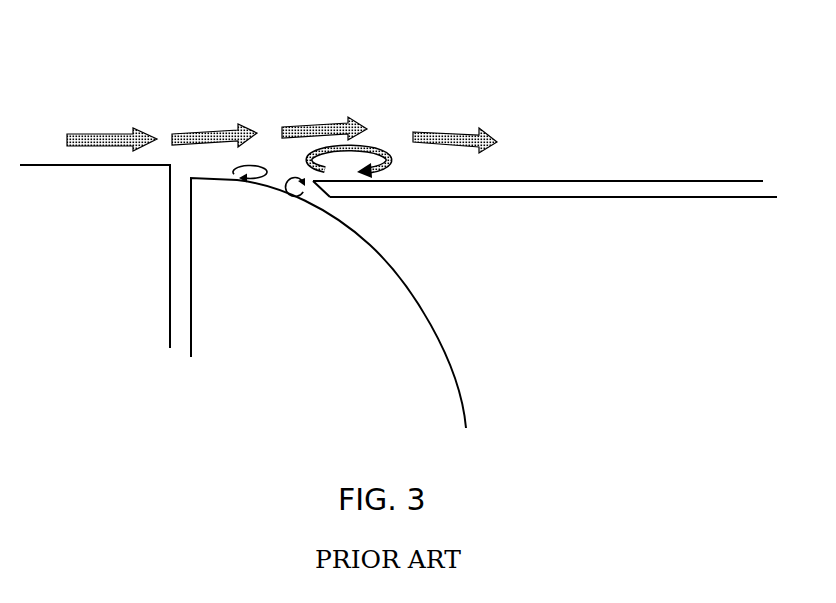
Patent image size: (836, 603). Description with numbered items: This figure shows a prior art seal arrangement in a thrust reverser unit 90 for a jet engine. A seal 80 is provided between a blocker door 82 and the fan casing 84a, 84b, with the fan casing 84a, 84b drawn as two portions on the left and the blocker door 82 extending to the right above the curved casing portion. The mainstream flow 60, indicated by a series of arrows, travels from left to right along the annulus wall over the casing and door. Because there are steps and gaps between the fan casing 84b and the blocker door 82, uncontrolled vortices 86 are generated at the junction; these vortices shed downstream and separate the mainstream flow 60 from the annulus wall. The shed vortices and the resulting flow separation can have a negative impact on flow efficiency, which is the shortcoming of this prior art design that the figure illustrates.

The mainstream flow 60 is at (90, 134).
The uncontrolled vortices 86 is at (352, 158).
The blocker door 82 is at (530, 188).
The fan casing 84a is at (95, 256).
The fan casing 84b is at (328, 303).
The seal 80 is at (313, 199).
The thrust reverser unit 90 is at (300, 400).